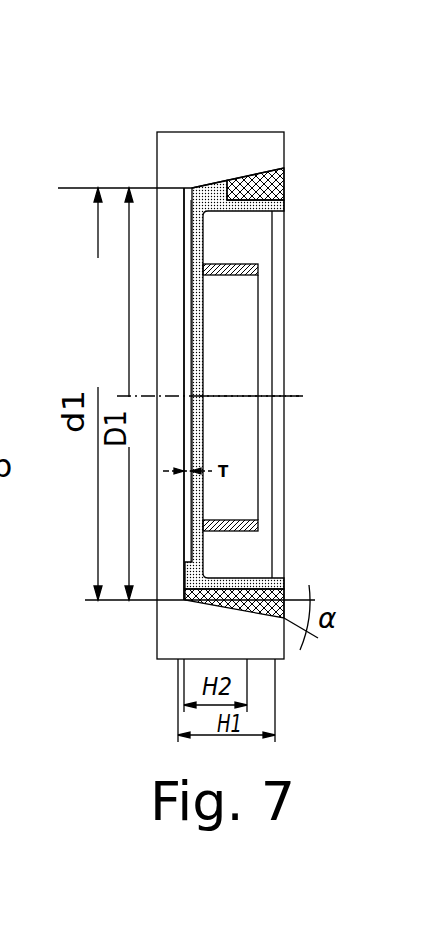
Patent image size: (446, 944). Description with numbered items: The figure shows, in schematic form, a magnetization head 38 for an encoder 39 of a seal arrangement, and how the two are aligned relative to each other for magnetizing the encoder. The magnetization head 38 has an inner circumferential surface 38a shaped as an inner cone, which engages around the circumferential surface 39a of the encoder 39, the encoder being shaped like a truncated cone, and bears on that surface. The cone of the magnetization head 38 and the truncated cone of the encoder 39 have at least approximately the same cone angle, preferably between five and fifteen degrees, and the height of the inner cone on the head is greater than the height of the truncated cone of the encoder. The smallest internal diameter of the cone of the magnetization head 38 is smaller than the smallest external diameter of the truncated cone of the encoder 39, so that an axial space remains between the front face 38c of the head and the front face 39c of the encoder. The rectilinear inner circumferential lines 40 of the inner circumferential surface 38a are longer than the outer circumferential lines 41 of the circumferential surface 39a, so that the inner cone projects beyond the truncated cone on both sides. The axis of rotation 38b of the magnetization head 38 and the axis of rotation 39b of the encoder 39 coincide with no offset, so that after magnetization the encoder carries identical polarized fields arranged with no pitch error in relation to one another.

The magnetization head 38 is at (172, 148).
The inner circumferential surface 38a is at (250, 170).
The axis of rotation 38b is at (246, 401).
The front face 38c is at (196, 250).
The encoder 39 is at (283, 183).
The circumferential surface 39a is at (243, 184).
The axis of rotation 39b is at (316, 401).
The front face 39c is at (187, 570).
The inner circumferential lines 40 is at (273, 172).
The outer circumferential lines 41 is at (282, 577).